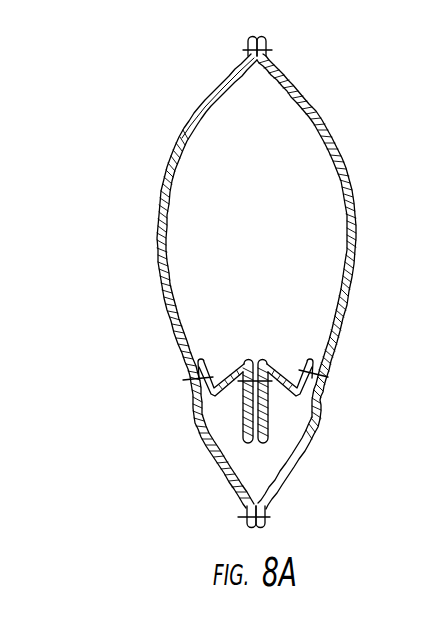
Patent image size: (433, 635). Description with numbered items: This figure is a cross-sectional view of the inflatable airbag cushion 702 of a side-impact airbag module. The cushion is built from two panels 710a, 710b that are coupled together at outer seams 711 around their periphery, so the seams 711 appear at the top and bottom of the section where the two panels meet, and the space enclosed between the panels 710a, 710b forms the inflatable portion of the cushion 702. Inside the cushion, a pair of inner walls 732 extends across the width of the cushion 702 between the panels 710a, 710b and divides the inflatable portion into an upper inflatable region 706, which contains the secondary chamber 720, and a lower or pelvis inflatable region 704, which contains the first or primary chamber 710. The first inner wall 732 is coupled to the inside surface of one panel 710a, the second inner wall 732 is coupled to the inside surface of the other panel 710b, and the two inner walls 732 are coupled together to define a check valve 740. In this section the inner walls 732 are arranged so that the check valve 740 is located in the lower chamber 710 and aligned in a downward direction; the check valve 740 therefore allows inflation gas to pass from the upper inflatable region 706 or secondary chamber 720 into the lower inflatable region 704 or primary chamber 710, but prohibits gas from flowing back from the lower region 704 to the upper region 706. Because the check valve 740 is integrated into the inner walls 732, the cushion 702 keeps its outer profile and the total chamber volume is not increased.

The airbag cushion 702 is at (120, 98).
The lower inflatable region 704 is at (182, 487).
The upper inflatable region 706 is at (131, 248).
The primary chamber 710 is at (257, 460).
The first panel 710a is at (222, 85).
The second panel 710b is at (323, 120).
The outer seam 711 is at (268, 38).
The secondary chamber 720 is at (246, 225).
The inner walls 732 is at (229, 362).
The check valve 740 is at (226, 412).